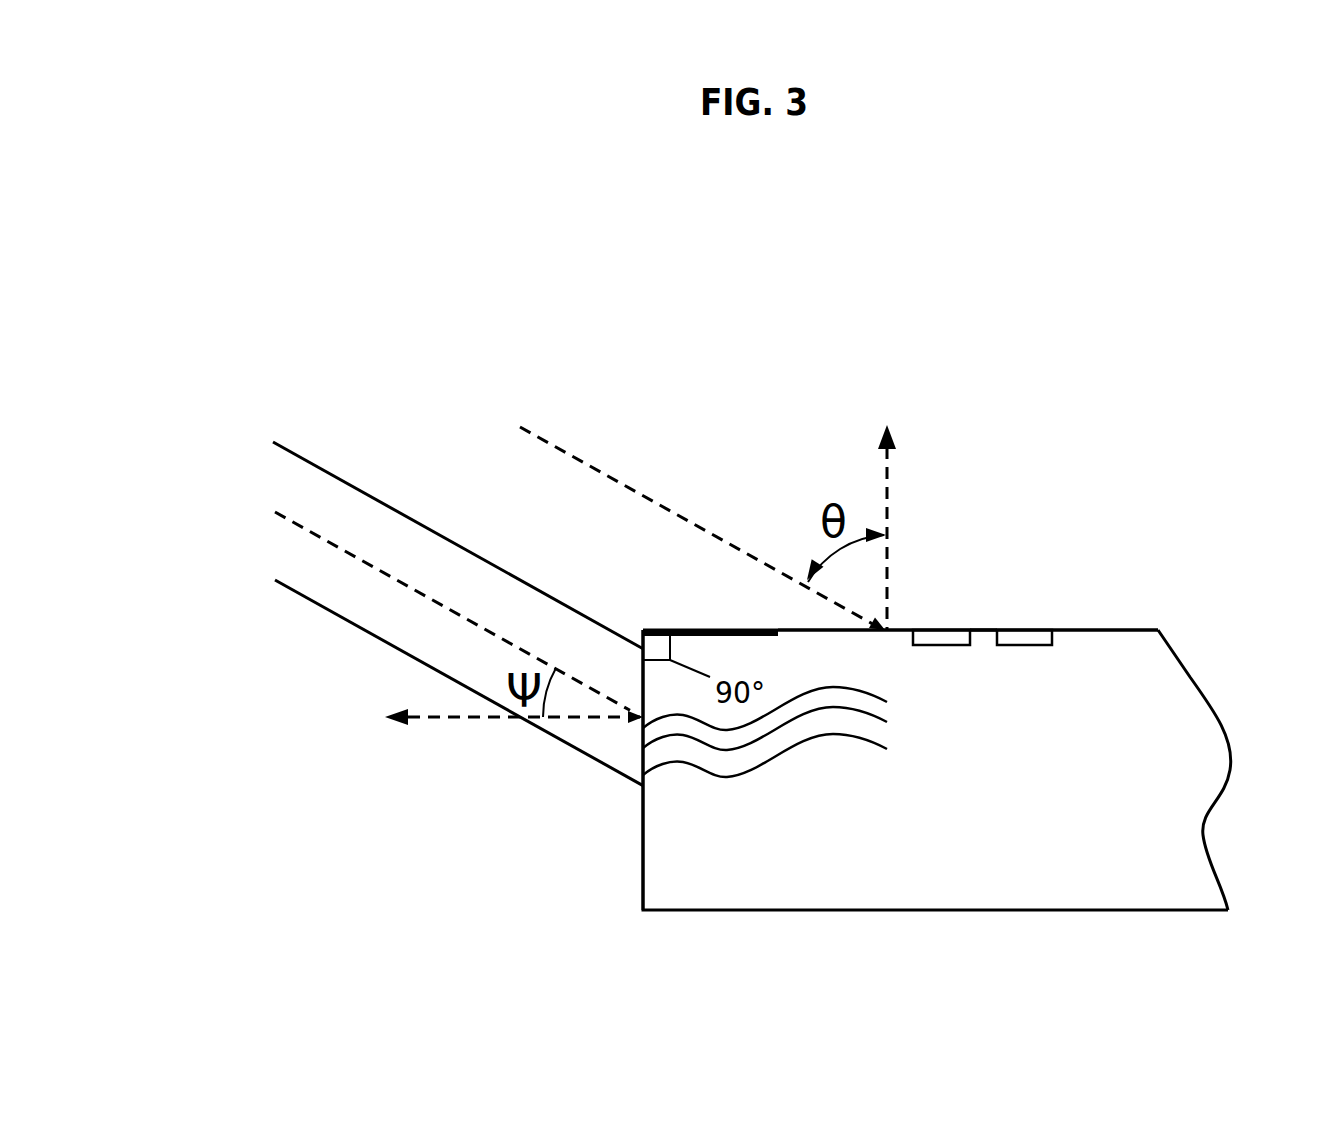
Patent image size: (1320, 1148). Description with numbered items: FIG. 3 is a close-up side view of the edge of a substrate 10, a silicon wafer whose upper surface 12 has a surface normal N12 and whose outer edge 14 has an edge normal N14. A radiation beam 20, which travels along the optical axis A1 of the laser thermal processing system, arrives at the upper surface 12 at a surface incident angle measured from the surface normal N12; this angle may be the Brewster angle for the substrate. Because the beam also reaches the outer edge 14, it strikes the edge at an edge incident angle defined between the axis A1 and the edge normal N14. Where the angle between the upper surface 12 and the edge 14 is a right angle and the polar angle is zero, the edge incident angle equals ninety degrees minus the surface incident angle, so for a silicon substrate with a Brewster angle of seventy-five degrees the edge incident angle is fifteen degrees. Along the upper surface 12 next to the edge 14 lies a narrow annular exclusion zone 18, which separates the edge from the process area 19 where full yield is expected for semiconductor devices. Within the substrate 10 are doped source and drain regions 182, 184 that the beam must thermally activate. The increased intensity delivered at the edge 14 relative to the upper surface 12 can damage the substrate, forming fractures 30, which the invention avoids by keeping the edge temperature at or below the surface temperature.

The substrate 10 is at (772, 864).
The upper surface 12 is at (1107, 630).
The outer edge 14 is at (643, 883).
The exclusion zone 18 is at (722, 630).
The process area 19 is at (997, 618).
The radiation beam 20 is at (467, 549).
The fractures 30 is at (893, 770).
The doped source region 182 is at (942, 645).
The doped drain region 184 is at (1025, 645).
The optical axis A1 is at (318, 536).
The surface normal N12 is at (888, 493).
The edge normal N14 is at (450, 722).